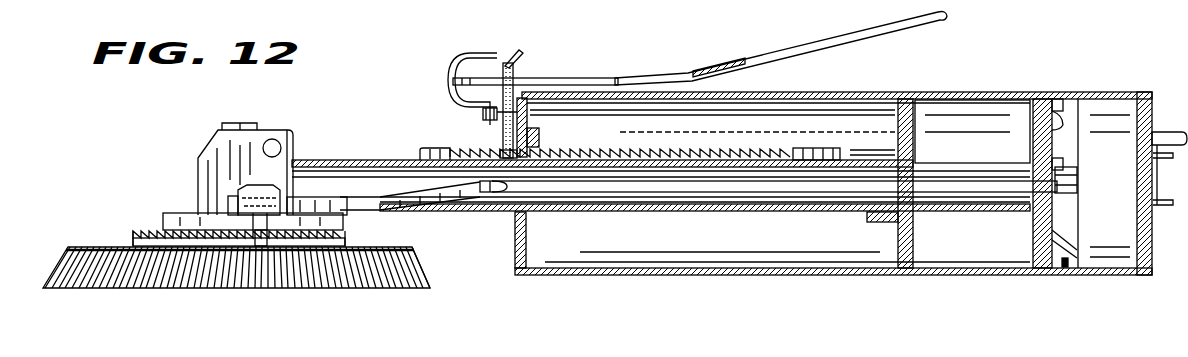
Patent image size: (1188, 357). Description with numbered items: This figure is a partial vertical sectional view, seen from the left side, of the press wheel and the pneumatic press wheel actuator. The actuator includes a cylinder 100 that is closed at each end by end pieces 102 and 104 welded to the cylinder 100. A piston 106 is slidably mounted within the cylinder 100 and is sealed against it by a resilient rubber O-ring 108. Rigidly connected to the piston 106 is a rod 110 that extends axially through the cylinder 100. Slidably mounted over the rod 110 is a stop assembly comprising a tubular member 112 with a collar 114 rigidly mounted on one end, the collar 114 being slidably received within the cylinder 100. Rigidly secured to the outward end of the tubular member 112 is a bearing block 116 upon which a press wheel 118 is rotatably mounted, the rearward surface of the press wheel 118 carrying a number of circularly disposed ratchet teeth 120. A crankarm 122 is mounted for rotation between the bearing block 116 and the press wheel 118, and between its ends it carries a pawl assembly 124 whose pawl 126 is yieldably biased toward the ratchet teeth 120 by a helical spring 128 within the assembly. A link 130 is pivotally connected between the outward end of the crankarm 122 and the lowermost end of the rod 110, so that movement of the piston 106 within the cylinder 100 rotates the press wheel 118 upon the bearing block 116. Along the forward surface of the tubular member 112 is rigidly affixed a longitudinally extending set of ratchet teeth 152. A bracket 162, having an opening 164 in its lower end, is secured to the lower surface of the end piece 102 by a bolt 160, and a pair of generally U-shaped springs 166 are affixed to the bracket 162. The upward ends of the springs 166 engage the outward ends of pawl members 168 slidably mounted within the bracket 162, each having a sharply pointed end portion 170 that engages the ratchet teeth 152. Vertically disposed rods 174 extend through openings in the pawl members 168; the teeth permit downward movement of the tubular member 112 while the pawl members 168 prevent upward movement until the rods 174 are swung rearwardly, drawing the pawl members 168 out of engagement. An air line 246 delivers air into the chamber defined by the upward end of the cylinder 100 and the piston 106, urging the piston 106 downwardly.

The cylinder 100 is at (990, 90).
The end piece 102 is at (517, 265).
The end piece 104 is at (1146, 262).
The piston 106 is at (1050, 264).
The O-ring 108 is at (1064, 268).
The rod 110 is at (962, 175).
The tubular member 112 is at (672, 212).
The collar 114 is at (890, 222).
The bearing block 116 is at (284, 132).
The press wheel 118 is at (67, 287).
The ratchet teeth 120 is at (145, 232).
The crankarm 122 is at (183, 215).
The pawl assembly 124 is at (262, 185).
The pawl 126 is at (260, 236).
The helical spring 128 is at (233, 203).
The link 130 is at (380, 210).
The ratchet teeth 152 is at (420, 158).
The bolt 160 is at (483, 114).
The bracket 162 is at (450, 92).
The opening 164 is at (447, 70).
The U-shaped springs 166 is at (476, 60).
The pawl members 168 is at (510, 80).
The end portion 170 is at (506, 148).
The rods 174 is at (620, 76).
The air line 246 is at (1158, 130).